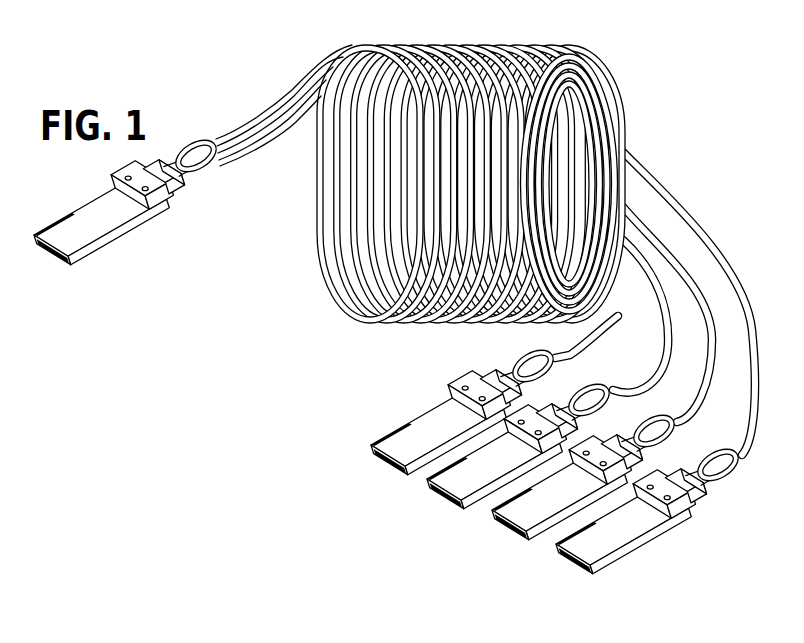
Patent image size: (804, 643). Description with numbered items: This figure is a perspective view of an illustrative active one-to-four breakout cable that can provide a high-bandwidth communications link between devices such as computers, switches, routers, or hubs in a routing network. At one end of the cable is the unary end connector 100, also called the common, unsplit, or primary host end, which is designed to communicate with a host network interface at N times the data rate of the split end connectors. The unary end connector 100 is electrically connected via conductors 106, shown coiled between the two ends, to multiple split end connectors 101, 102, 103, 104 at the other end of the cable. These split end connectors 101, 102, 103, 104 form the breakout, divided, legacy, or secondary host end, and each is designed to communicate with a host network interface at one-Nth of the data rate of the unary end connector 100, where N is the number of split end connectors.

The unary end connector 100 is at (102, 243).
The split end connector 101 is at (375, 458).
The split end connector 102 is at (445, 502).
The split end connector 103 is at (515, 533).
The split end connector 104 is at (575, 567).
The conductors 106 is at (340, 378).